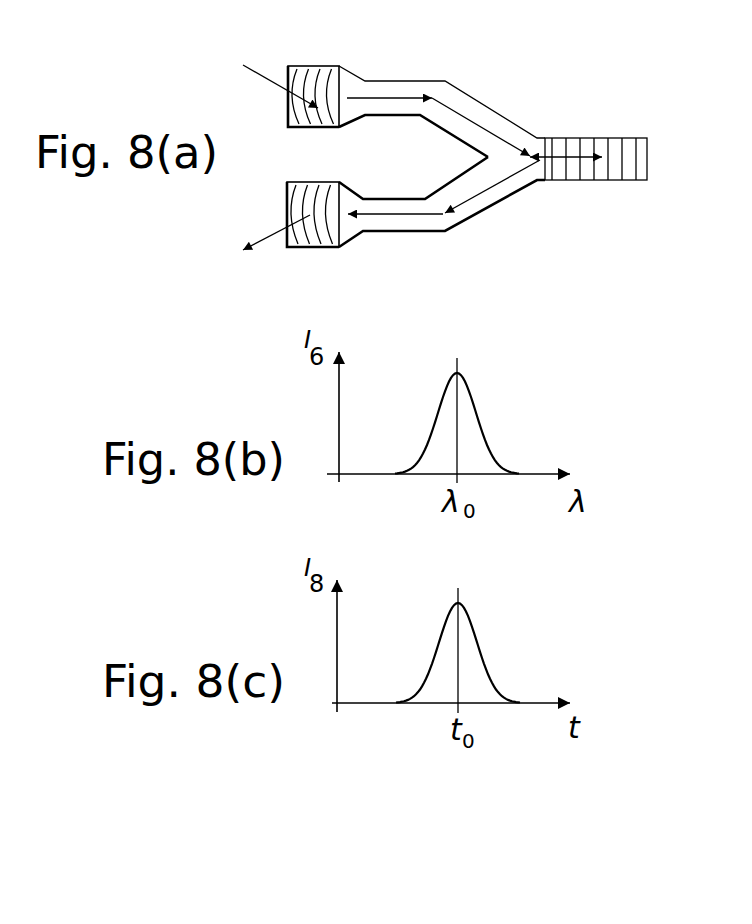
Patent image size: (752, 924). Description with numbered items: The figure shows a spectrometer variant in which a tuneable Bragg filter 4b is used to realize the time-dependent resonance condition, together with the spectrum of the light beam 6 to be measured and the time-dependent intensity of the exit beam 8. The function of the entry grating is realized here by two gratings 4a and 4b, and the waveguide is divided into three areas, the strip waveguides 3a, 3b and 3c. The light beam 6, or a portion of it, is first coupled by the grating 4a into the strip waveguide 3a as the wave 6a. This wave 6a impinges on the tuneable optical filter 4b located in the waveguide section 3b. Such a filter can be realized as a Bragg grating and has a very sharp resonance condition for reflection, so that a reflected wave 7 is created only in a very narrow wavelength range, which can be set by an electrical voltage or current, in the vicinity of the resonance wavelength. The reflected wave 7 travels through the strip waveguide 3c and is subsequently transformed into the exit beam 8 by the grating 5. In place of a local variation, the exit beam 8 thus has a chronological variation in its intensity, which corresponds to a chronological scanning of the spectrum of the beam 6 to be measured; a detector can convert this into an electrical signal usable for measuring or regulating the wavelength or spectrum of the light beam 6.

The strip waveguide 3a is at (377, 80).
The waveguide section 3b is at (545, 137).
The strip waveguide 3c is at (402, 232).
The grating 4a is at (318, 75).
The tuneable Bragg filter 4b is at (605, 142).
The second grating field 5 is at (316, 222).
The light beam 6 is at (263, 77).
The wave 6a is at (400, 97).
The reflected wave 7 is at (475, 190).
The exit beam 8 is at (278, 230).